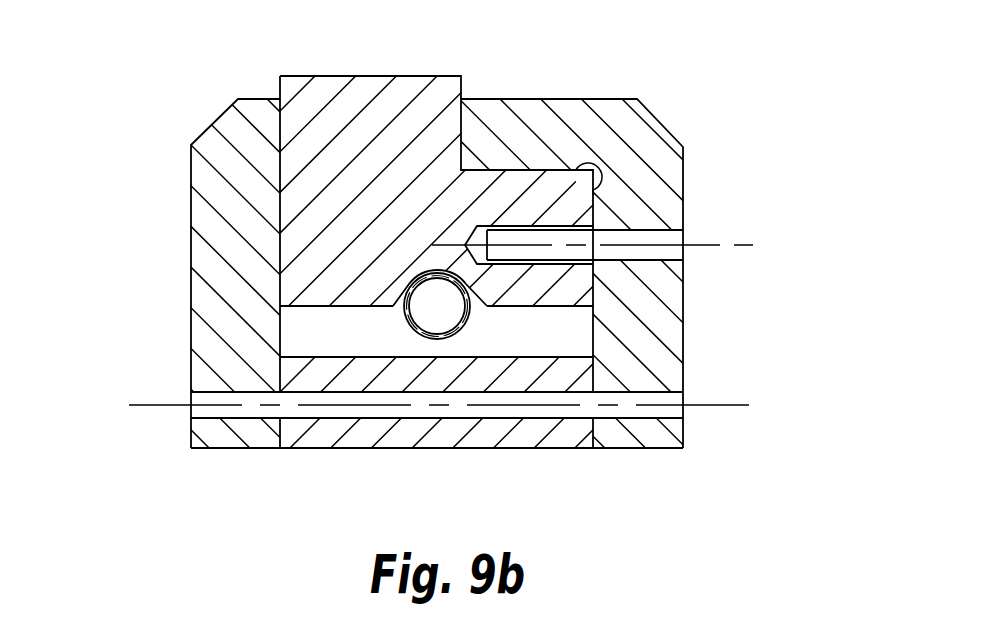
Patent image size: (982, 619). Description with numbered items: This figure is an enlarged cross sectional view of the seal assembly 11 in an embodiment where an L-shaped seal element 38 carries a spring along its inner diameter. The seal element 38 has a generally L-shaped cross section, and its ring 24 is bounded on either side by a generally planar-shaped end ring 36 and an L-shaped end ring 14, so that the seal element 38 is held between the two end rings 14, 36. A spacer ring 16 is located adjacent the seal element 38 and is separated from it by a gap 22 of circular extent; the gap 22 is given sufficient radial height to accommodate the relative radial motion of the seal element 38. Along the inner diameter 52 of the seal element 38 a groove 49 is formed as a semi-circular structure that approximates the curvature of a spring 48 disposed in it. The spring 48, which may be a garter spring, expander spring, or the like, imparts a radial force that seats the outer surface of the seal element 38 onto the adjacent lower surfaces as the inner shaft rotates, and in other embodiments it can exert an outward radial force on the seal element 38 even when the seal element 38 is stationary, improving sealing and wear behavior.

The seal assembly 11 is at (667, 123).
The L-shaped end ring 14 is at (670, 185).
The spacer ring 16 is at (323, 432).
The gap 22 is at (578, 315).
The ring 24 is at (295, 287).
The end ring 36 is at (215, 260).
The seal element 38 is at (315, 98).
The spring 48 is at (468, 317).
The groove 49 is at (392, 299).
The inner diameter 52 is at (545, 307).